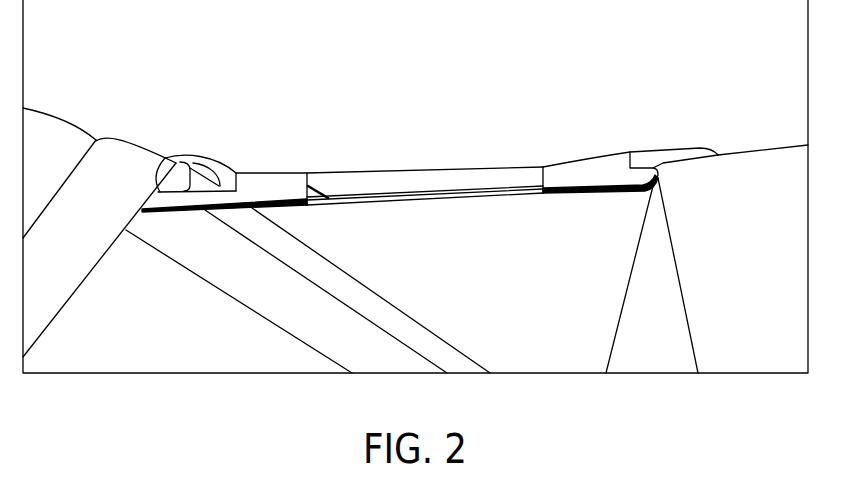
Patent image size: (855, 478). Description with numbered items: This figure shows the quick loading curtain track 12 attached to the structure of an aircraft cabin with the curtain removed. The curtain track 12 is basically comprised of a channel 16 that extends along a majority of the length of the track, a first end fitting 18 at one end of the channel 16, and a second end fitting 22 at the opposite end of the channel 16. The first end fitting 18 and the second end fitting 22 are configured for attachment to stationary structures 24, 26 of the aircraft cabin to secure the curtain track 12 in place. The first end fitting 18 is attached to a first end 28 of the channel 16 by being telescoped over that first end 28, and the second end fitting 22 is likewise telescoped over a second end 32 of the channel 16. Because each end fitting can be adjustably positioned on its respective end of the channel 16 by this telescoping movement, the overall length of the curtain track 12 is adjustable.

The curtain track 12 is at (458, 172).
The channel 16 is at (352, 193).
The first end fitting 18 is at (587, 170).
The second end fitting 22 is at (260, 190).
The stationary structure 24 is at (657, 225).
The stationary structure 26 is at (178, 165).
The first end of the channel 28 is at (540, 180).
The second end of the channel 32 is at (338, 199).